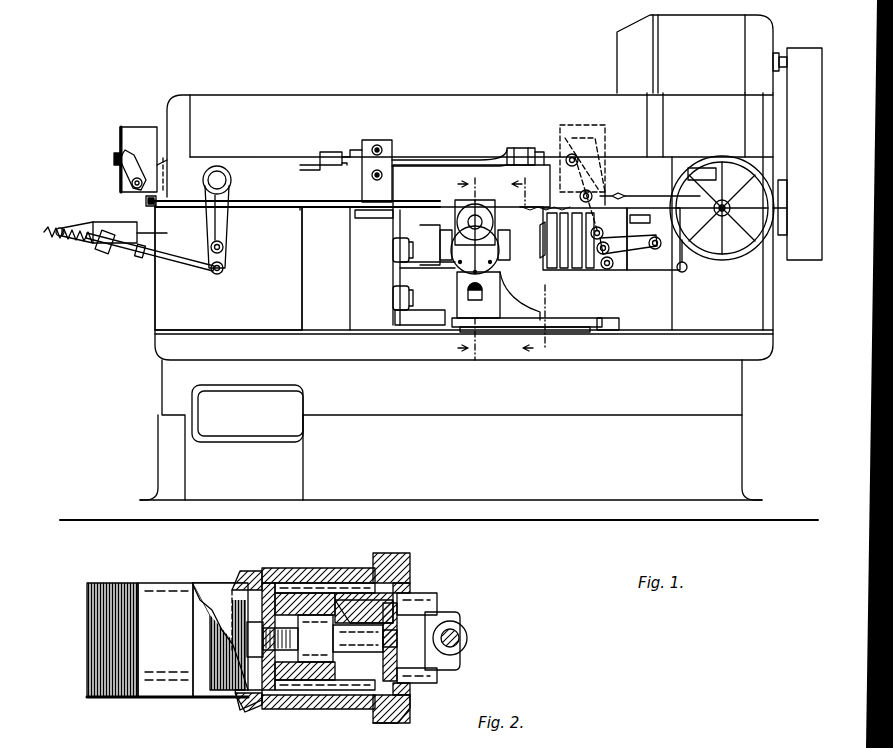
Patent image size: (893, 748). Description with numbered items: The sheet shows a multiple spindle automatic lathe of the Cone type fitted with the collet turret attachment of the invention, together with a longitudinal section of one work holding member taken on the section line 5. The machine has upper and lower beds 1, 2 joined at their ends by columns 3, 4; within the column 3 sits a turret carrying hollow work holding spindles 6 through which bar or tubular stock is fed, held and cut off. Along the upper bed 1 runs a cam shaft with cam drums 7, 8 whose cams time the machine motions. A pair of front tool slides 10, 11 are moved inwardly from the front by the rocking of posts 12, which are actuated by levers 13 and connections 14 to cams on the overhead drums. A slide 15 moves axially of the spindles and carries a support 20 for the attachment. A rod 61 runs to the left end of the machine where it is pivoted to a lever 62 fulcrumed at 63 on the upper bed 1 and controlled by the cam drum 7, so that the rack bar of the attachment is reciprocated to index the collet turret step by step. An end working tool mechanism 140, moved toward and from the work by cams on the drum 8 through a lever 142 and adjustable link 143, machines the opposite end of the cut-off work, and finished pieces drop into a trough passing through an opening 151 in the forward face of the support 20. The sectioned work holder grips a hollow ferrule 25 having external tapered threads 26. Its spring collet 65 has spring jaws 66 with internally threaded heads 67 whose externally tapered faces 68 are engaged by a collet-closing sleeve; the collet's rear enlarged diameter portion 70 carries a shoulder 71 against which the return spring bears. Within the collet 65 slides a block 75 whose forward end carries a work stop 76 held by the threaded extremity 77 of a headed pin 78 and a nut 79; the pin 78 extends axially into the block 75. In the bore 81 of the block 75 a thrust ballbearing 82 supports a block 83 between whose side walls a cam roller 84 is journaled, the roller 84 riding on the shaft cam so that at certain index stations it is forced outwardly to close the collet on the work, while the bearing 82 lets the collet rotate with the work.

In FIG. 1, the upper bed 1 is at (490, 94).
In FIG. 1, the lower bed 2 is at (595, 500).
In FIG. 1, the column 3 is at (158, 307).
In FIG. 1, the column 4 is at (750, 300).
In FIG. 1, the section line 5- 5 is at (457, 267).
In FIG. 1, the hollow work holding spindles 6 is at (521, 266).
In FIG. 1, the cam drum 7 is at (147, 132).
In FIG. 1, the cam drum 8 is at (587, 123).
In FIG. 1, the front tool slide 10 is at (398, 232).
In FIG. 1, the front tool slide 11 is at (398, 316).
In FIG. 1, the posts 12 is at (392, 142).
In FIG. 1, the levers 13 is at (350, 148).
In FIG. 1, the connections 14 is at (326, 152).
In FIG. 1, the slide 15 is at (572, 327).
In FIG. 1, the support 20 is at (462, 288).
In FIG. 1, the rod 61 is at (262, 207).
In FIG. 1, the lever 62 is at (140, 199).
In FIG. 1, the fulcrum 63 is at (128, 178).
In FIG. 1, the end working tool mechanism 140 is at (575, 270).
In FIG. 1, the lever 142 is at (612, 188).
In FIG. 1, the adjustable link 143 is at (640, 262).
In FIG. 1, the opening 151 is at (481, 298).
In FIG. 2, the hollow ferrule 25 is at (157, 600).
In FIG. 2, the external tapered threads 26 is at (102, 582).
In FIG. 2, the spring collet 65 is at (413, 582).
In FIG. 2, the spring jaws 66 is at (312, 568).
In FIG. 2, the heads 67 is at (260, 572).
In FIG. 2, the externally tapered faces 68 is at (240, 571).
In FIG. 2, the rear enlarged diameter portion 70 is at (392, 555).
In FIG. 2, the shoulder 71 is at (373, 556).
In FIG. 2, the block 75 is at (437, 590).
In FIG. 2, the work stop 76 is at (245, 705).
In FIG. 2, the threaded extremity 77 is at (300, 682).
In FIG. 2, the headed pin 78 is at (330, 662).
In FIG. 2, the nut 79 is at (247, 636).
In FIG. 2, the bore 81 is at (383, 718).
In FIG. 2, the thrust ballbearing 82 is at (412, 710).
In FIG. 2, the block 83 is at (462, 618).
In FIG. 2, the cam roller 84 is at (468, 637).